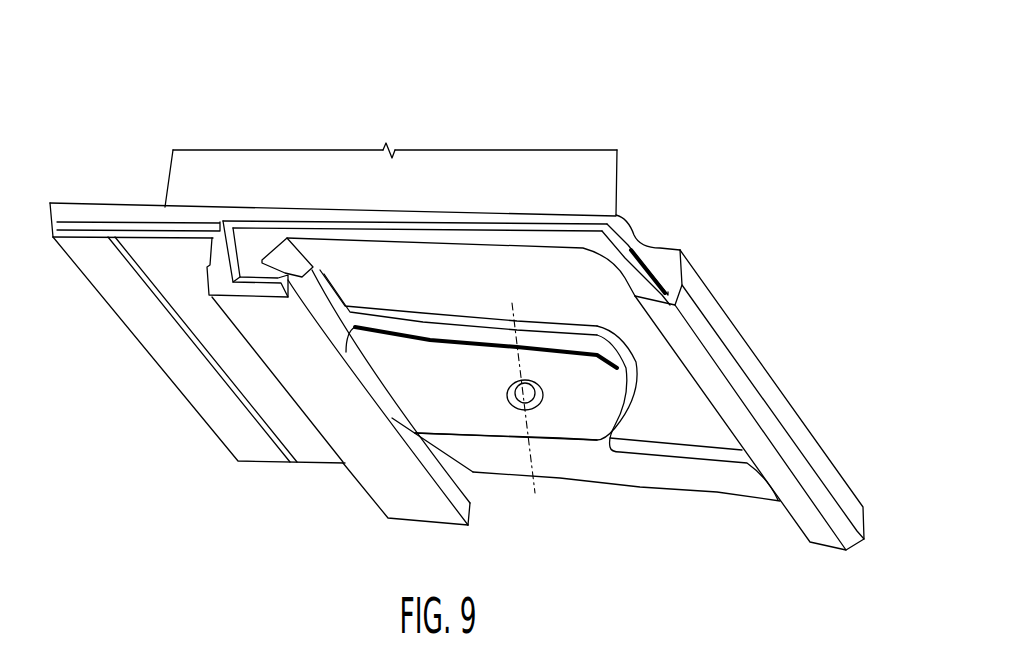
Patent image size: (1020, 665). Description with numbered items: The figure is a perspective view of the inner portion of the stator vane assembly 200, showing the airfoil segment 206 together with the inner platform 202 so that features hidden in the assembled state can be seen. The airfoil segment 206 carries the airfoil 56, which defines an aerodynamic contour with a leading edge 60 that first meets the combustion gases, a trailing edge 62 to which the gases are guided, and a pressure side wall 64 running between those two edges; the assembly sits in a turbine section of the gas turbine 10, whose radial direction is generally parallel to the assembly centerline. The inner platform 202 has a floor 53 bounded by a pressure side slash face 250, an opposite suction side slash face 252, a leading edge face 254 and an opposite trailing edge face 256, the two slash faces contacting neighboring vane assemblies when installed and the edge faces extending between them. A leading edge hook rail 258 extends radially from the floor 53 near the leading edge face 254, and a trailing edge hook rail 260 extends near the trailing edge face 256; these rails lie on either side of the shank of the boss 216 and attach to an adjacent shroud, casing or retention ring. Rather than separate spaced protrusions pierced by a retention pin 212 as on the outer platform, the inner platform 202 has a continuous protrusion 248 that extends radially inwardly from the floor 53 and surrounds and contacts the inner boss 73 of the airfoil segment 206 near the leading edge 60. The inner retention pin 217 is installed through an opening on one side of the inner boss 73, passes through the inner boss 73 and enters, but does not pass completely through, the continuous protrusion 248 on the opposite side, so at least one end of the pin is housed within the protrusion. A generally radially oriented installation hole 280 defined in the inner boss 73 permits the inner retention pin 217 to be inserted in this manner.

The stator vane assembly 200 is at (640, 56).
The inner platform 202 is at (767, 400).
The airfoil segment 206 is at (388, 153).
The airfoil 56 is at (360, 154).
The pressure side wall 64 is at (448, 153).
The leading edge 60 is at (617, 185).
The trailing edge 62 is at (163, 183).
The continuous protrusion 248 is at (427, 322).
The pressure side slash face 250 is at (198, 215).
The leading edge face 254 is at (634, 239).
The trailing edge face 256 is at (107, 305).
The trailing edge hook rail 260 is at (297, 358).
The leading edge hook rail 258 is at (785, 452).
The gas turbine 10 is at (477, 298).
The retention pin 212 is at (596, 424).
The inner retention pin 217 is at (541, 405).
The installation hole 280 is at (528, 388).
The boss 216 is at (387, 421).
The inner boss 73 is at (440, 400).
The suction side slash face 252 is at (700, 494).
The floor 53 is at (703, 425).